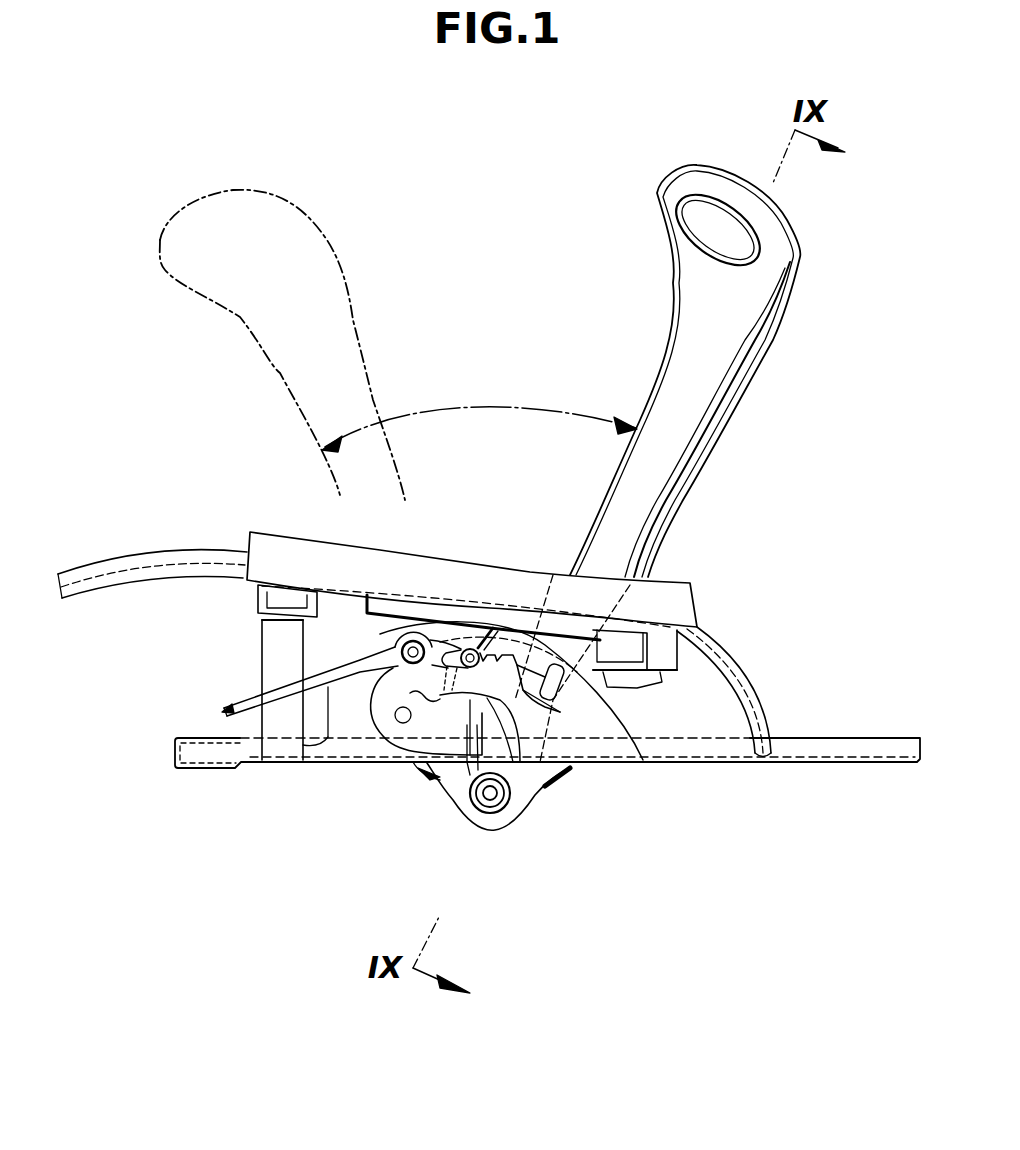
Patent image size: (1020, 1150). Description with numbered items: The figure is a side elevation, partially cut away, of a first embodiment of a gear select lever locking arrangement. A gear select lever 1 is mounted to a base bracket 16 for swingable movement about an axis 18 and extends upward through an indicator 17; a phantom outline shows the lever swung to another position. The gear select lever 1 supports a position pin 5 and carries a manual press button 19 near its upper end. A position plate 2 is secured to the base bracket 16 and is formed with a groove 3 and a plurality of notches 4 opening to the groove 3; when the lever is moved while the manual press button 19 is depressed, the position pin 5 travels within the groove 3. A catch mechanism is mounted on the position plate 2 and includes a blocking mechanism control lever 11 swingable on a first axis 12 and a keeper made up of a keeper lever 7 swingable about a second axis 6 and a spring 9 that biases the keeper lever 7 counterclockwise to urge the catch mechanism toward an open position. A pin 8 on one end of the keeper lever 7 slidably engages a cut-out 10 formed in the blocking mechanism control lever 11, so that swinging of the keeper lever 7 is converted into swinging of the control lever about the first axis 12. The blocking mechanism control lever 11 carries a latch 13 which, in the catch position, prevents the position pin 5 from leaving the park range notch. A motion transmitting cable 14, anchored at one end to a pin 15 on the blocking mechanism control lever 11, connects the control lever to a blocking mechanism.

The gear select lever 1 is at (636, 460).
The position plate 2 is at (623, 713).
The groove 3 is at (512, 686).
The notches 4 is at (505, 653).
The position pin 5 is at (549, 686).
The second axis 6 is at (468, 648).
The keeper lever 7 is at (460, 650).
The pin 8 is at (547, 793).
The spring 9 is at (491, 627).
The cut-out 10 is at (420, 767).
The blocking mechanism control lever 11 is at (378, 714).
The first axis 12 is at (403, 723).
The latch 13 is at (480, 740).
The motion transmitting cable 14 is at (248, 700).
The pin 15 is at (400, 646).
The base bracket 16 is at (175, 748).
The indicator 17 is at (266, 545).
The axis 18 is at (495, 797).
The manual press button 19 is at (735, 240).